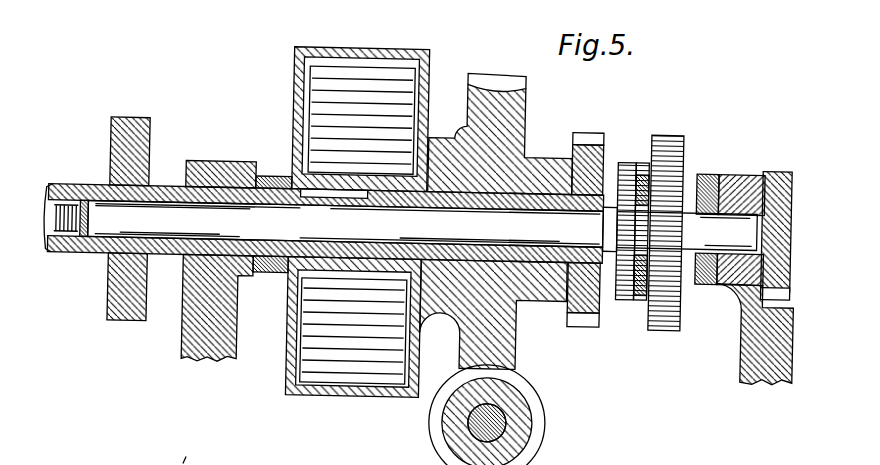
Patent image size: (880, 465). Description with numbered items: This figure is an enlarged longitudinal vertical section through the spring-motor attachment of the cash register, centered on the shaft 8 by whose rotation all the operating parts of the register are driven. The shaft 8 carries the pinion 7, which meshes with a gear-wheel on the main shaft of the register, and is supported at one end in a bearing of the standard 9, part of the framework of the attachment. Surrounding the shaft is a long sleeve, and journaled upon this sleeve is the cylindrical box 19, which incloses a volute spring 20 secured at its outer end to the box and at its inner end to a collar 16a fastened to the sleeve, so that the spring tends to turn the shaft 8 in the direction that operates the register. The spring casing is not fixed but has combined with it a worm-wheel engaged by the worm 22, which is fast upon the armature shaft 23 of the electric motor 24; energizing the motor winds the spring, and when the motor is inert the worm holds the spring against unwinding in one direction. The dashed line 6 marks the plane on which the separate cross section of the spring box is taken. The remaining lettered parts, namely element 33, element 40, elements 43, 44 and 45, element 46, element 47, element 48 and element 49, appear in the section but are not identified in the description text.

The section line 6 is at (299, 419).
The pinion 7 is at (786, 160).
The shaft 8 is at (400, 225).
The standard 9 is at (735, 164).
The collar 16a is at (268, 306).
The cylindrical box 19 is at (372, 43).
The volute spring 20 is at (365, 376).
The worm 22 is at (538, 403).
The armature shaft 23 is at (470, 432).
The electric motor 24 is at (494, 82).
The block 33 is at (584, 316).
The hub 40 is at (216, 165).
The gear 43 is at (681, 129).
The clutch gear 44 is at (666, 123).
The clutch hub 45 is at (631, 238).
The sleeve 46 is at (560, 204).
The flange 47 is at (109, 141).
The spring plug 48 is at (49, 252).
The lead 49 is at (191, 451).